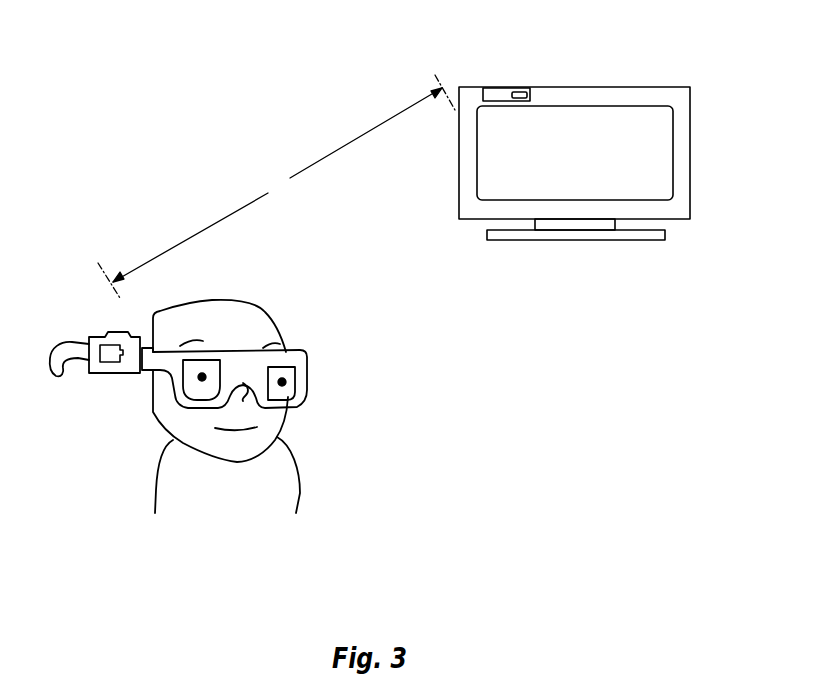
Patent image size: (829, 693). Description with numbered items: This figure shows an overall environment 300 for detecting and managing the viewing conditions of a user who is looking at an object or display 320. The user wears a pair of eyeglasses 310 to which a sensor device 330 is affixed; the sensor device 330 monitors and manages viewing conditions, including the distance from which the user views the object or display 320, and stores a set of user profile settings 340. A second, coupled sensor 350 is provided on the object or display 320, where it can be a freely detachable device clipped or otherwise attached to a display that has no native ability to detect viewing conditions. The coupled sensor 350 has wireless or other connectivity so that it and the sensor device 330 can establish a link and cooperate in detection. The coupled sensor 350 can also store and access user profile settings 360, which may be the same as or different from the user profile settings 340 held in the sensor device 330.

The display system 300 is at (394, 263).
The eyeglasses 310 is at (307, 372).
The object or display 320 is at (690, 97).
The sensor device 330 is at (120, 374).
The user profile settings 340 is at (101, 341).
The coupled sensor 350 is at (492, 87).
The user profile settings 360 is at (517, 92).